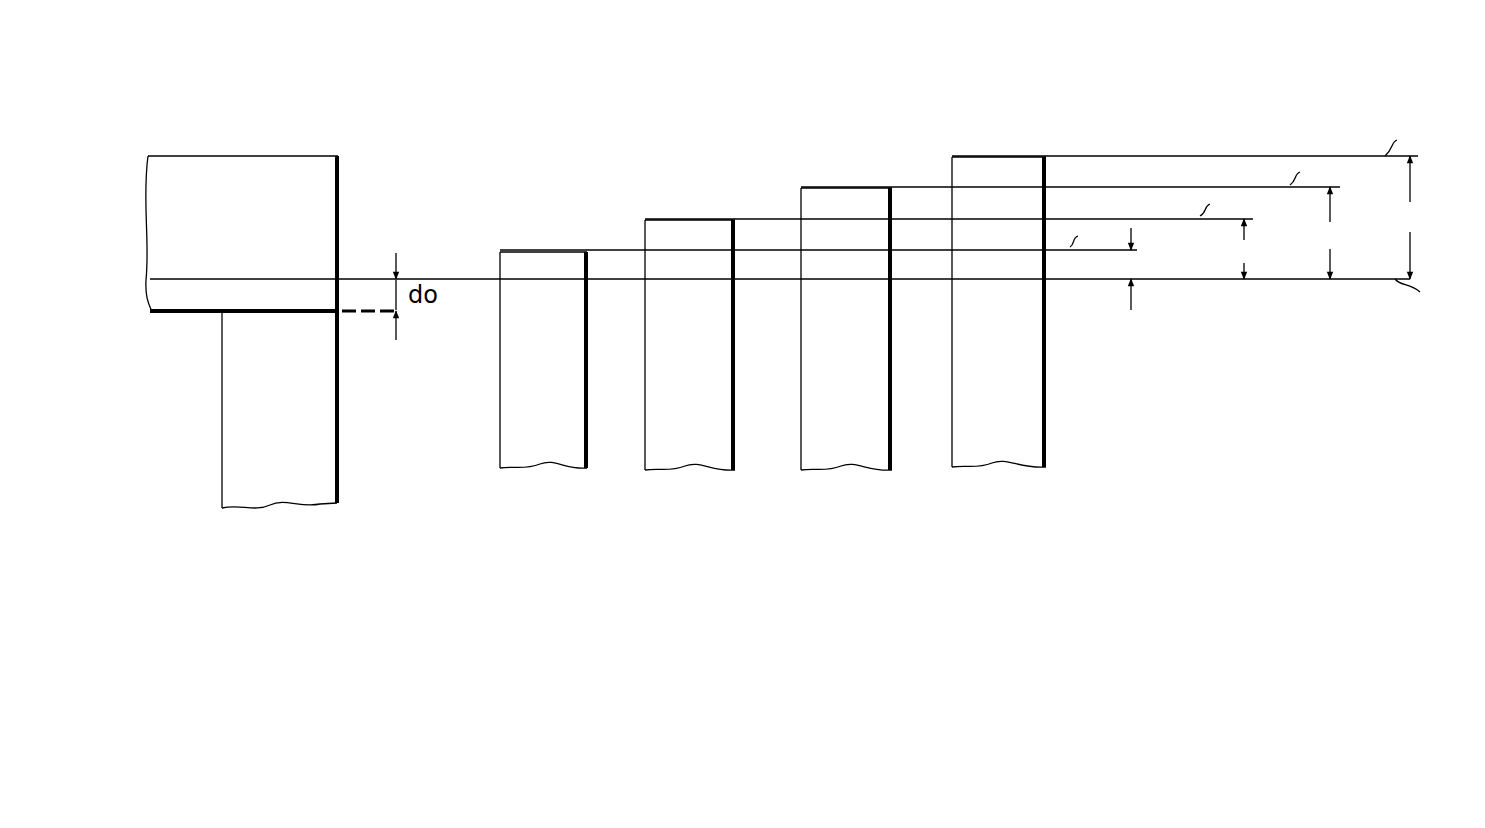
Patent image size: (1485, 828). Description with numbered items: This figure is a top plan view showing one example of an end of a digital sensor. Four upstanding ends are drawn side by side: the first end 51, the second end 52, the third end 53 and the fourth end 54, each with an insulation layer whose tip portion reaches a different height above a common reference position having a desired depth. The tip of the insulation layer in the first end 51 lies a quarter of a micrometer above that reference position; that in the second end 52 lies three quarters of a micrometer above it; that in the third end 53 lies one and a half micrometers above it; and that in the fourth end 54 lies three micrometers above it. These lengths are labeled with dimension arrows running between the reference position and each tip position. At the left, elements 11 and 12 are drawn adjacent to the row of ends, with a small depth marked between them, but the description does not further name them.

The tape guide shaft 11 is at (303, 474).
The tape guide flange 12 is at (258, 165).
The first end 51 is at (547, 252).
The second end 52 is at (686, 222).
The third end 53 is at (846, 192).
The fourth end 54 is at (1101, 390).